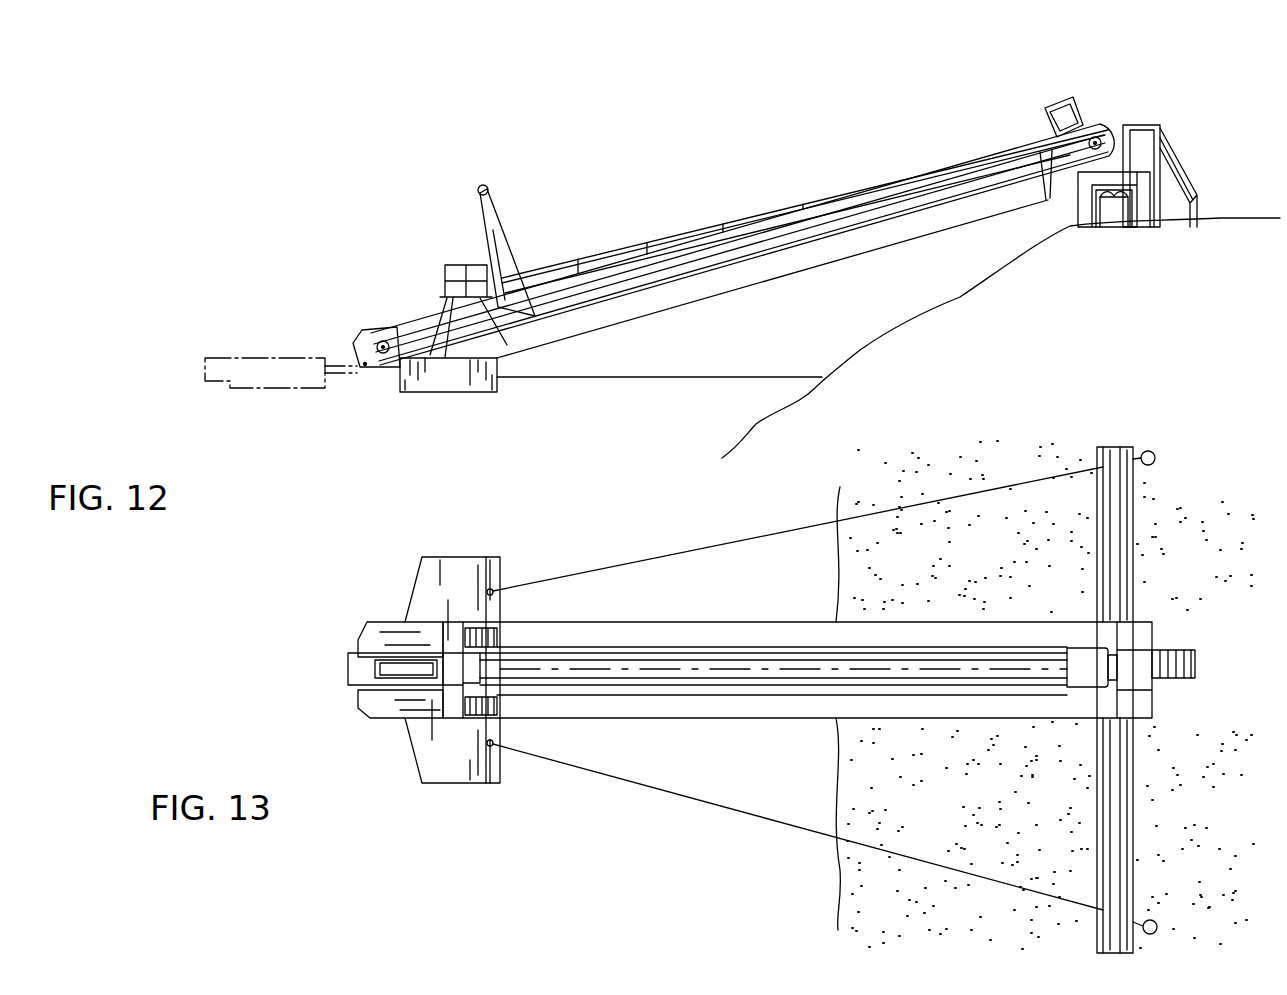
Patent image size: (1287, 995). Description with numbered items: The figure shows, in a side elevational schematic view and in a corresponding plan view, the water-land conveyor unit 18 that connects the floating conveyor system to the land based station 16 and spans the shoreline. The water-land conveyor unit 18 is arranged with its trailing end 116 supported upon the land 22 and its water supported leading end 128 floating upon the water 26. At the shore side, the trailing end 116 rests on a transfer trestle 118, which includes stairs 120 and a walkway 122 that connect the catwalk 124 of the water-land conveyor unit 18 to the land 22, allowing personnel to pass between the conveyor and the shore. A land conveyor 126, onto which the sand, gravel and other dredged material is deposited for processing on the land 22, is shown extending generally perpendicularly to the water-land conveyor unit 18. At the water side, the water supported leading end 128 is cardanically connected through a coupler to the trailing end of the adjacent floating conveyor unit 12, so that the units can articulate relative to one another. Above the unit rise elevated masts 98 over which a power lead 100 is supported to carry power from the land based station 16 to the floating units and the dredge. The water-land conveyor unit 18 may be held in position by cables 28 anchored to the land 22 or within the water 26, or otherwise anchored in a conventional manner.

In FIG. 12, the floating conveyor unit 12 is at (280, 347).
In FIG. 12, the land based station 16 is at (1139, 165).
In FIG. 13, the land based station 16 is at (1182, 700).
In FIG. 12, the water-land conveyor unit 18 is at (752, 180).
In FIG. 13, the water-land conveyor unit 18 is at (945, 592).
In FIG. 12, the land 22 is at (1150, 285).
In FIG. 13, the land 22 is at (1218, 752).
In FIG. 12, the water 26 is at (681, 423).
In FIG. 13, the water 26 is at (616, 840).
In FIG. 13, the cables 28 is at (792, 528).
In FIG. 12, the mast 98 is at (480, 214).
In FIG. 12, the power lead 100 is at (472, 234).
In FIG. 12, the trailing end 116 is at (1110, 130).
In FIG. 13, the trailing end 116 is at (1117, 665).
In FIG. 12, the transfer trestle 118 is at (1110, 170).
In FIG. 12, the stairs 120 is at (1173, 185).
In FIG. 13, the stairs 120 is at (1195, 662).
In FIG. 12, the walkway 122 is at (1135, 172).
In FIG. 13, the walkway 122 is at (1153, 690).
In FIG. 13, the catwalk 124 is at (735, 687).
In FIG. 12, the land conveyor 126 is at (1114, 208).
In FIG. 13, the land conveyor 126 is at (1134, 529).
In FIG. 12, the water supported leading end 128 is at (358, 331).
In FIG. 13, the water supported leading end 128 is at (400, 652).